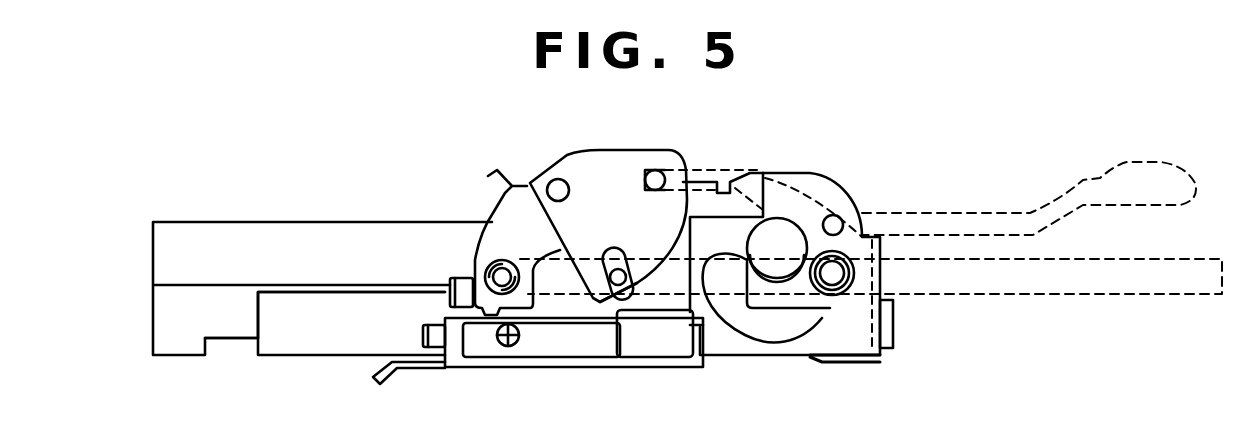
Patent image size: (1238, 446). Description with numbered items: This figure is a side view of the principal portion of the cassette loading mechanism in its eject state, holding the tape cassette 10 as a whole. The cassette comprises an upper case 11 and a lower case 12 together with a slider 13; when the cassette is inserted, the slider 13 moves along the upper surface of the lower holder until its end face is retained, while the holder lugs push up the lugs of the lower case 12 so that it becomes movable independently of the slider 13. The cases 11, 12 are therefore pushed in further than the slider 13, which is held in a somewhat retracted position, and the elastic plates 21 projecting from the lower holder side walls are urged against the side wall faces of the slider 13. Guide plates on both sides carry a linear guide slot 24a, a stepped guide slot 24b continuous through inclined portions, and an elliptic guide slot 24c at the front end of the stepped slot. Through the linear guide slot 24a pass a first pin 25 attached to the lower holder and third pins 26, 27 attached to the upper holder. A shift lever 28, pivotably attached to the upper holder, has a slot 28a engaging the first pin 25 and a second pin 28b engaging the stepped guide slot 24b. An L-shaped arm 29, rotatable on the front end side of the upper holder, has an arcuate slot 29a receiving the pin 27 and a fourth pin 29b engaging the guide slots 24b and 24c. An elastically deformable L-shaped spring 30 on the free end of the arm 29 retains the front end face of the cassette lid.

The tape cassette 10 is at (331, 215).
The upper case 11 is at (237, 232).
The lower case 12 is at (233, 328).
The slider 13 is at (320, 338).
The elastic plates 21 is at (540, 343).
The linear guide slot 24a is at (1180, 283).
The stepped guide slot 24b is at (713, 178).
The elliptic guide slot 24c is at (1173, 175).
The first pin 25 is at (613, 290).
The third pin 26 is at (495, 268).
The third pin 27 is at (850, 272).
The shift lever 28 is at (603, 167).
The slot 28a is at (630, 297).
The second pin 28b is at (660, 172).
The L-shaped arm 29 is at (807, 185).
The arcuate slot 29a is at (787, 317).
The fourth pin 29b is at (840, 219).
The L-shaped spring 30 is at (840, 363).